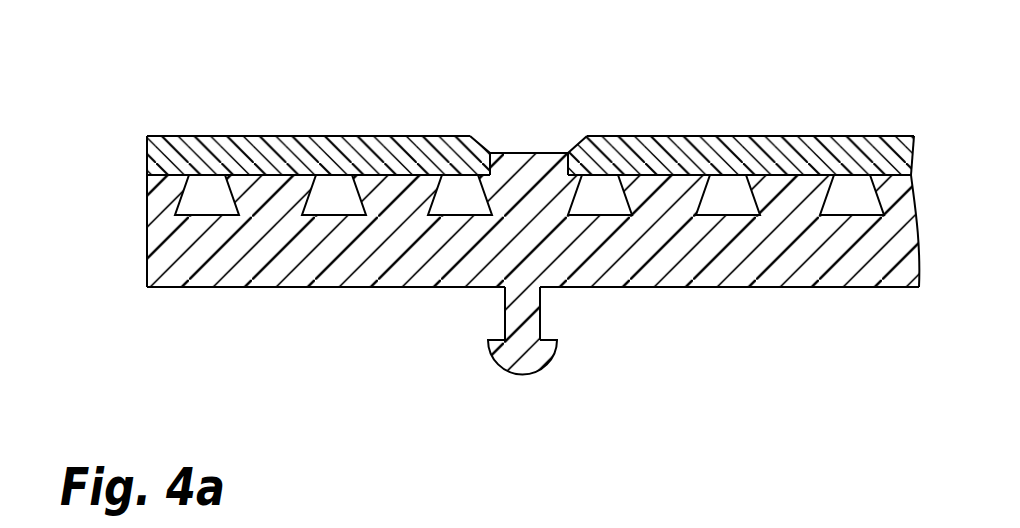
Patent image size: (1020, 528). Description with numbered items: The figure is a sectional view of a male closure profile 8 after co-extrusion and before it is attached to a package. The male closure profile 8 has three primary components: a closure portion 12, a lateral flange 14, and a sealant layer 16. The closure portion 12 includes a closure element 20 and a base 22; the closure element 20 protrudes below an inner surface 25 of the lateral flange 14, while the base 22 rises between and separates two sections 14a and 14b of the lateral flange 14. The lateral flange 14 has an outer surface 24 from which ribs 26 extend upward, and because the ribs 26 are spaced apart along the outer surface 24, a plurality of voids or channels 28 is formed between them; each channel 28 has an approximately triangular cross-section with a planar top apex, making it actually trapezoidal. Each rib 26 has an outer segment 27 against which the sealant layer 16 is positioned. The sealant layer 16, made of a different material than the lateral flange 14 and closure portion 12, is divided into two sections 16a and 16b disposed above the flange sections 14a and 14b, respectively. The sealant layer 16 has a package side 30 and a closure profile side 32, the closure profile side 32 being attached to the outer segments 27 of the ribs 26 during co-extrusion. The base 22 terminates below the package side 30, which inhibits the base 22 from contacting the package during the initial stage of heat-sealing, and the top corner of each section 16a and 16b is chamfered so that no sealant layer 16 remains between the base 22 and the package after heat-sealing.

The male closure profile 8 is at (329, 345).
The closure portion 12 is at (577, 311).
The lateral flange 14 is at (122, 248).
The flange section 14a is at (741, 272).
The flange section 14b is at (287, 263).
The sealant layer 16 is at (122, 164).
The sealant layer section 16a is at (682, 136).
The sealant layer section 16b is at (257, 136).
The closure element 20 is at (553, 357).
The base 22 is at (540, 152).
The outer surface 24 is at (213, 215).
The inner surface 25 is at (423, 288).
The rib 26 is at (160, 203).
The outer segment 27 is at (260, 178).
The channel 28 is at (330, 190).
The package side 30 is at (352, 136).
The closure profile side 32 is at (450, 170).